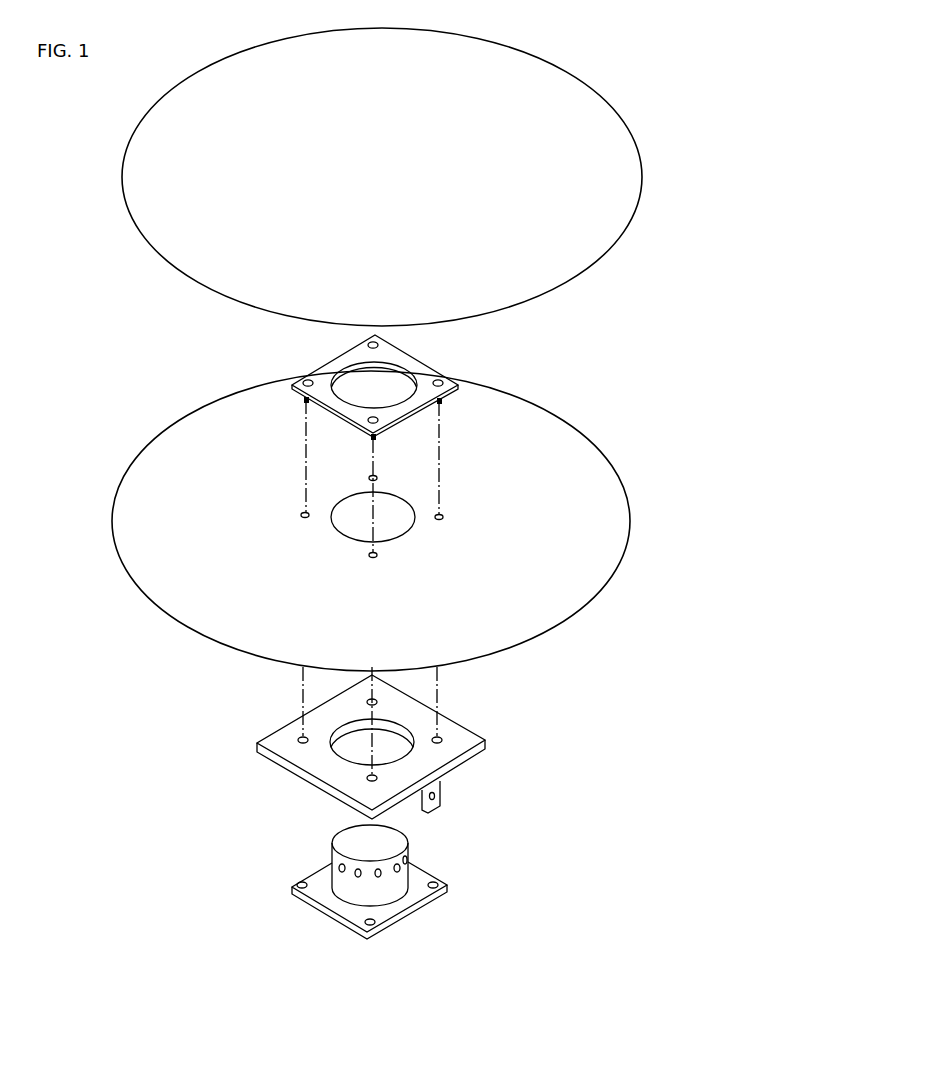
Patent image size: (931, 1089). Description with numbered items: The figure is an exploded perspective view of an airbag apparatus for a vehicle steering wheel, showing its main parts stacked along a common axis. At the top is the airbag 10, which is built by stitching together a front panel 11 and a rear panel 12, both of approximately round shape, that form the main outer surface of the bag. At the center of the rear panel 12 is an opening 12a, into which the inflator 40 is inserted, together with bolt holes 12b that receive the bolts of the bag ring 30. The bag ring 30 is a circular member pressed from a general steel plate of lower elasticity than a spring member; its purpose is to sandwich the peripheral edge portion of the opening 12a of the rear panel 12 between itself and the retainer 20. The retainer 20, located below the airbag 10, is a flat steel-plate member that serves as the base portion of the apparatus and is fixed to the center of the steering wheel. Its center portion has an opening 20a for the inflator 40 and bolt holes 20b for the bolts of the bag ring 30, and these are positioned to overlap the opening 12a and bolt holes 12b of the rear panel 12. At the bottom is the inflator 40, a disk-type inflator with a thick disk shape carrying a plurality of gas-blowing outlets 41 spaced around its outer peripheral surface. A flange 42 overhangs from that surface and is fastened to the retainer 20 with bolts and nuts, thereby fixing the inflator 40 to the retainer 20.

The airbag 10 is at (470, 349).
The front panel 11 is at (622, 232).
The rear panel 12 is at (595, 440).
The opening 12a is at (333, 527).
The bolt holes 12b is at (302, 512).
The bag ring 30 is at (320, 365).
The retainer 20 is at (463, 728).
The opening 20a is at (342, 758).
The bolt holes 20b is at (302, 741).
The inflator 40 is at (408, 847).
The gas-blowing outlets 41 is at (358, 875).
The flange 42 is at (423, 900).